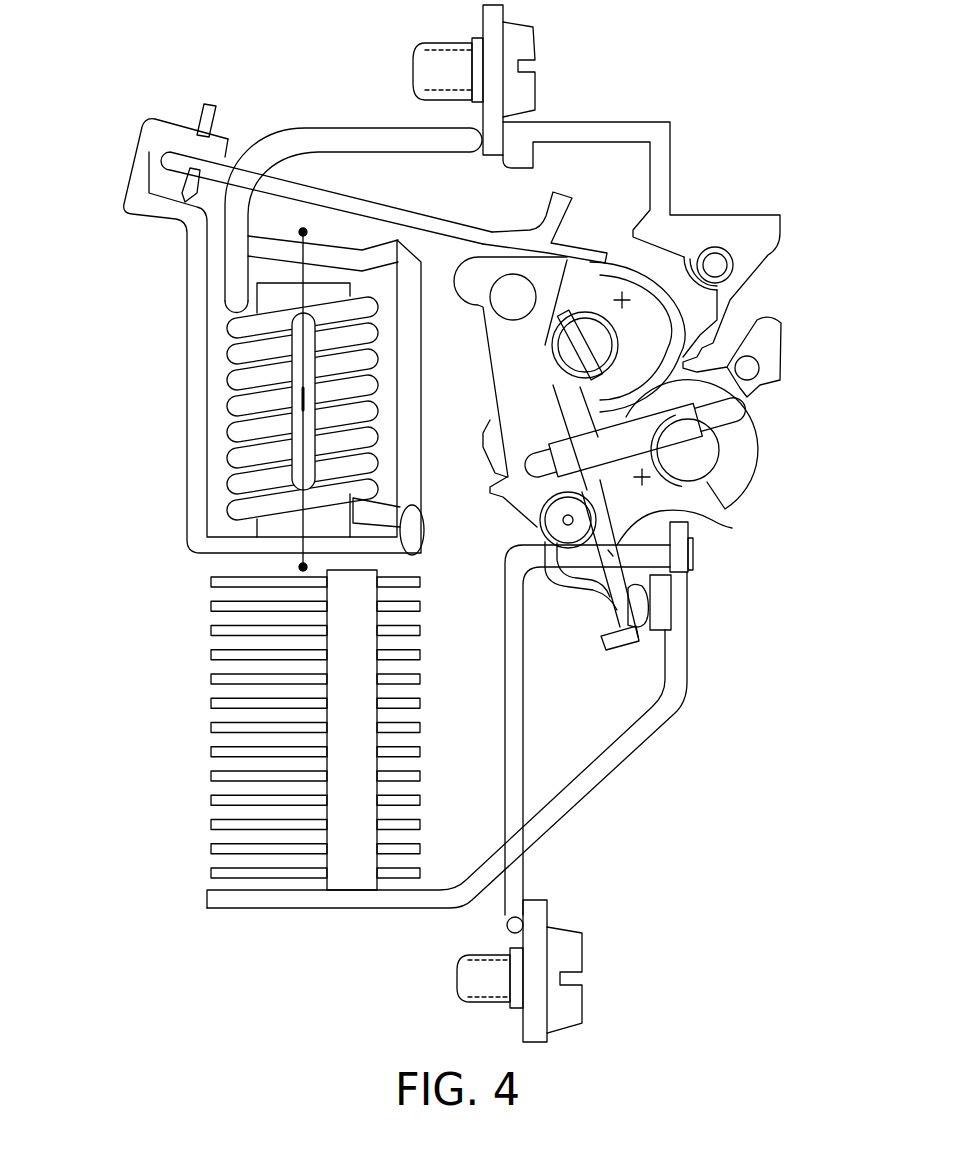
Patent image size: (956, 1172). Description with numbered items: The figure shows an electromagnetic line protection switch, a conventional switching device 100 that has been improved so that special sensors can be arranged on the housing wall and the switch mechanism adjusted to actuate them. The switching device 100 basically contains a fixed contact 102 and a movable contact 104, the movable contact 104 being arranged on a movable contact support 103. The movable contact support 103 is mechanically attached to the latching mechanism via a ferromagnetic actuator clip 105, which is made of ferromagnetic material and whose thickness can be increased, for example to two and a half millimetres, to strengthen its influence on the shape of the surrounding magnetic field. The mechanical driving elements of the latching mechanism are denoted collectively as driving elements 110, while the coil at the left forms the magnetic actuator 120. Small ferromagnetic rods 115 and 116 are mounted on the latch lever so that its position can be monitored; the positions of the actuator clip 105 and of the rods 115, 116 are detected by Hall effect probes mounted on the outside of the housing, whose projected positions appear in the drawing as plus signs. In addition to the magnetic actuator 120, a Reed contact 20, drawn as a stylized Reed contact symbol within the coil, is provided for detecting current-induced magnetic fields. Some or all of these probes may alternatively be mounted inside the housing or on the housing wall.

The switching device 100 is at (830, 153).
The Reed contact 20 is at (300, 347).
The magnetic actuator 120 is at (228, 408).
The mechanical driving elements 110 is at (500, 484).
The ferromagnetic rod 115 is at (513, 297).
The ferromagnetic actuator clip 105 is at (727, 417).
The movable contact support 103 is at (710, 520).
The fixed contact 102 is at (664, 601).
The movable contact 104 is at (647, 624).
The ferromagnetic rod 116 is at (570, 533).